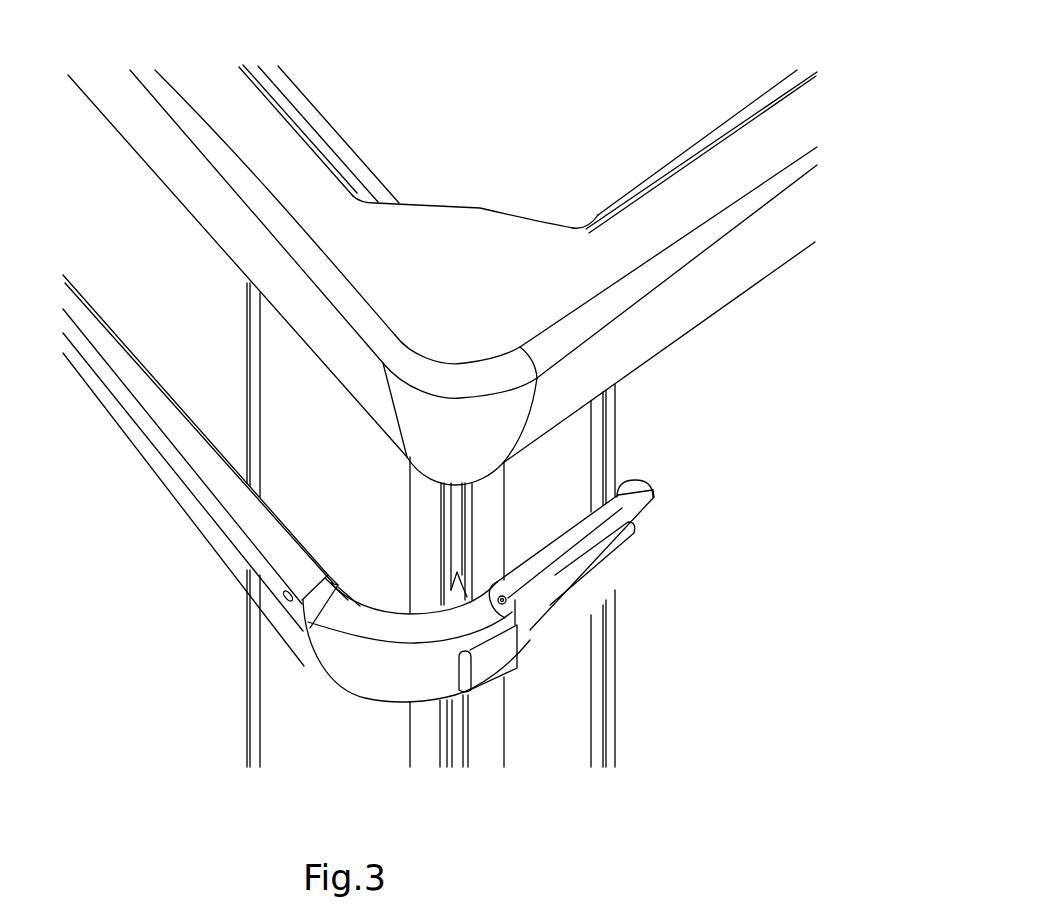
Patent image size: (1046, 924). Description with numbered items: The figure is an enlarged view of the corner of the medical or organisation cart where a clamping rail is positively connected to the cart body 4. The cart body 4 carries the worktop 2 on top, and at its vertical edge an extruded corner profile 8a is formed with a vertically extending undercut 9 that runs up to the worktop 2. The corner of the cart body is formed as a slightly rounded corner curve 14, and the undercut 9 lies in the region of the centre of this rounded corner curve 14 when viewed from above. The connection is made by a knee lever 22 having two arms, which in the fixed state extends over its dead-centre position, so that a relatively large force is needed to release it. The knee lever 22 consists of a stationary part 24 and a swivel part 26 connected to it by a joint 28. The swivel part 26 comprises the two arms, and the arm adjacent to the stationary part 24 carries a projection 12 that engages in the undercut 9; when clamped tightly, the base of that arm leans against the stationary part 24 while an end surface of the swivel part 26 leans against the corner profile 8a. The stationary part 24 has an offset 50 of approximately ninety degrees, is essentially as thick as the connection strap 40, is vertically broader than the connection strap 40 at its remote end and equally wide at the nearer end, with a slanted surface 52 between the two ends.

The worktop 2 is at (468, 132).
The cart body 4 is at (737, 478).
The corner profile 8a is at (288, 277).
The undercut 9 is at (450, 483).
The projection 12 is at (453, 587).
The rounded corner curve 14 is at (485, 382).
The knee lever 22 is at (477, 697).
The stationary part 24 is at (387, 662).
The swivel part 26 is at (542, 560).
The joint 28 is at (517, 613).
The connection strap 40 is at (262, 522).
The offset 50 is at (430, 673).
The slanted surface 52 is at (373, 615).